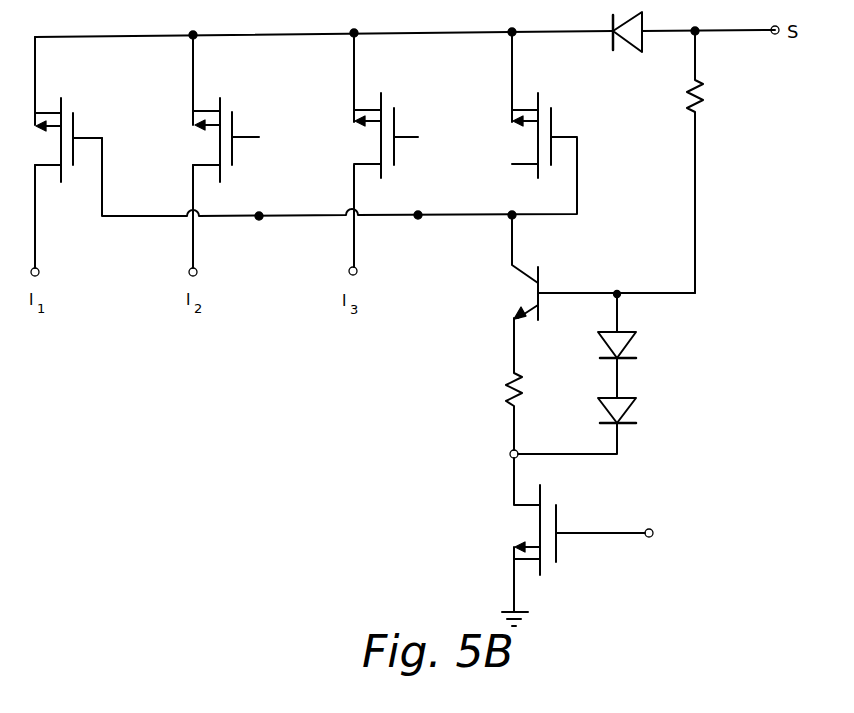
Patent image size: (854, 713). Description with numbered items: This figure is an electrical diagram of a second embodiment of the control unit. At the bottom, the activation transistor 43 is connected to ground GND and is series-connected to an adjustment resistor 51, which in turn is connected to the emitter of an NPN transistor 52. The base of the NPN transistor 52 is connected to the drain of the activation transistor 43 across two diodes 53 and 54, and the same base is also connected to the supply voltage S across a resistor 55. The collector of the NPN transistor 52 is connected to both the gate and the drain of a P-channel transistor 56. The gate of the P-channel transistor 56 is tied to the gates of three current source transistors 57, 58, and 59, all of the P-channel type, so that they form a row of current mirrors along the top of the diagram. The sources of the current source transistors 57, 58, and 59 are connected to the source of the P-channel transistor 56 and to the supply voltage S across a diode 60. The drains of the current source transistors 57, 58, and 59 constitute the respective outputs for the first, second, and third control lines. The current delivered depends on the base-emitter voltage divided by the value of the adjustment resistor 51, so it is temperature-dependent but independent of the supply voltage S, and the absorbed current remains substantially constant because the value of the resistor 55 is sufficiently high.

The activation transistor 43 is at (550, 522).
The adjustment resistor 51 is at (507, 398).
The NPN transistor 52 is at (540, 283).
The diode 53 is at (637, 342).
The diode 54 is at (637, 410).
The resistor 55 is at (708, 99).
The P-channel transistor 56 is at (552, 118).
The current source transistor 57 is at (395, 118).
The current source transistor 58 is at (233, 120).
The current source transistor 59 is at (74, 120).
The diode 60 is at (636, 38).